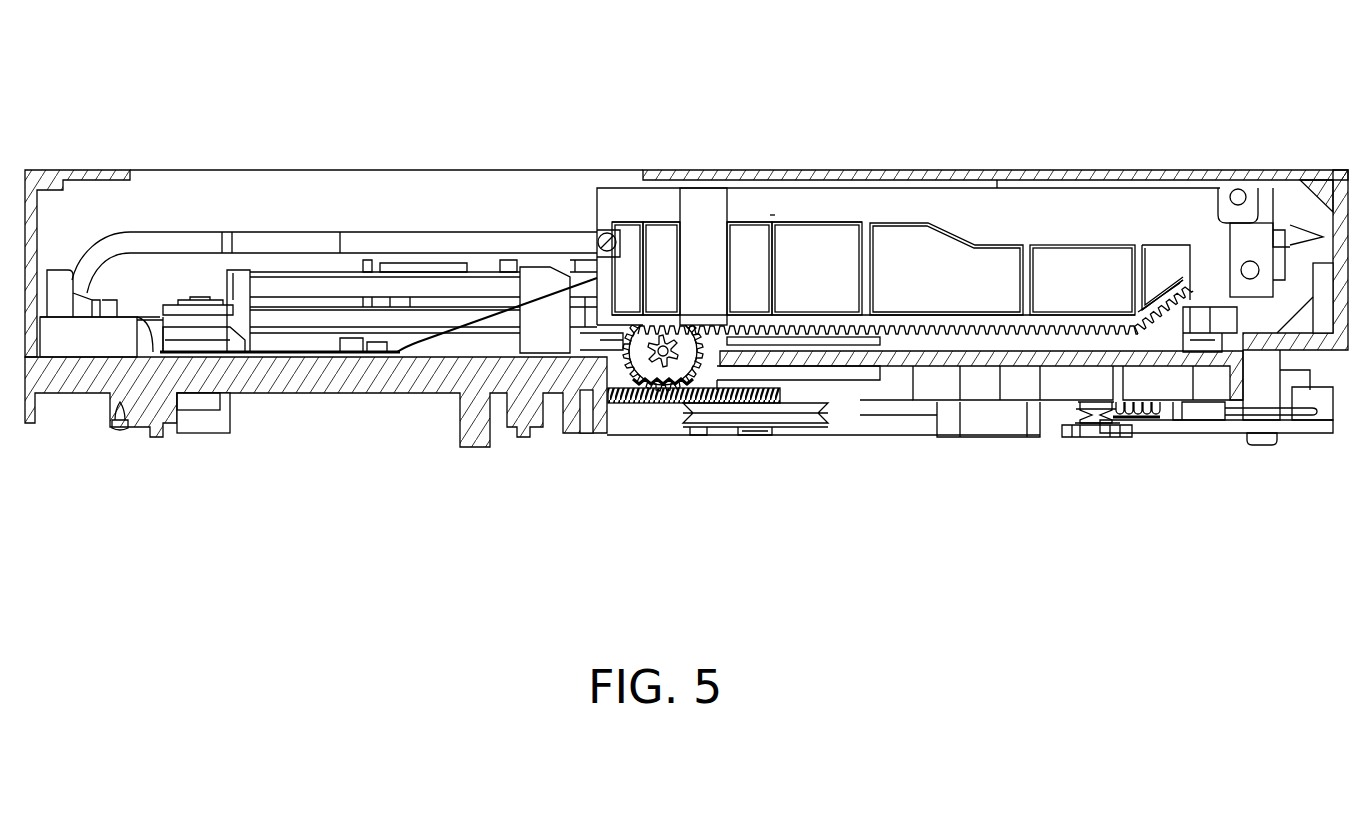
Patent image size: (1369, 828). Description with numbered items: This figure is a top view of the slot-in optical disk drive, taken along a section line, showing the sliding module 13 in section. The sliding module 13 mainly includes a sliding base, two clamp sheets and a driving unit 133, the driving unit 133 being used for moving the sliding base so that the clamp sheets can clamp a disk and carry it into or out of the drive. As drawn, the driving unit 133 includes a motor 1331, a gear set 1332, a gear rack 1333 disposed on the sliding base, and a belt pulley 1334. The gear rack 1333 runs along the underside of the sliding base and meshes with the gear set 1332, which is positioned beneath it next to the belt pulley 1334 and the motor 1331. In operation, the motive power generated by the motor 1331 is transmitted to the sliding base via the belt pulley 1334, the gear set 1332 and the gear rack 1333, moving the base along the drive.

The sliding module 13 is at (815, 215).
The driving unit 133 is at (900, 447).
The motor 1331 is at (1048, 472).
The gear set 1332 is at (638, 405).
The gear rack 1333 is at (837, 338).
The belt pulley 1334 is at (793, 408).